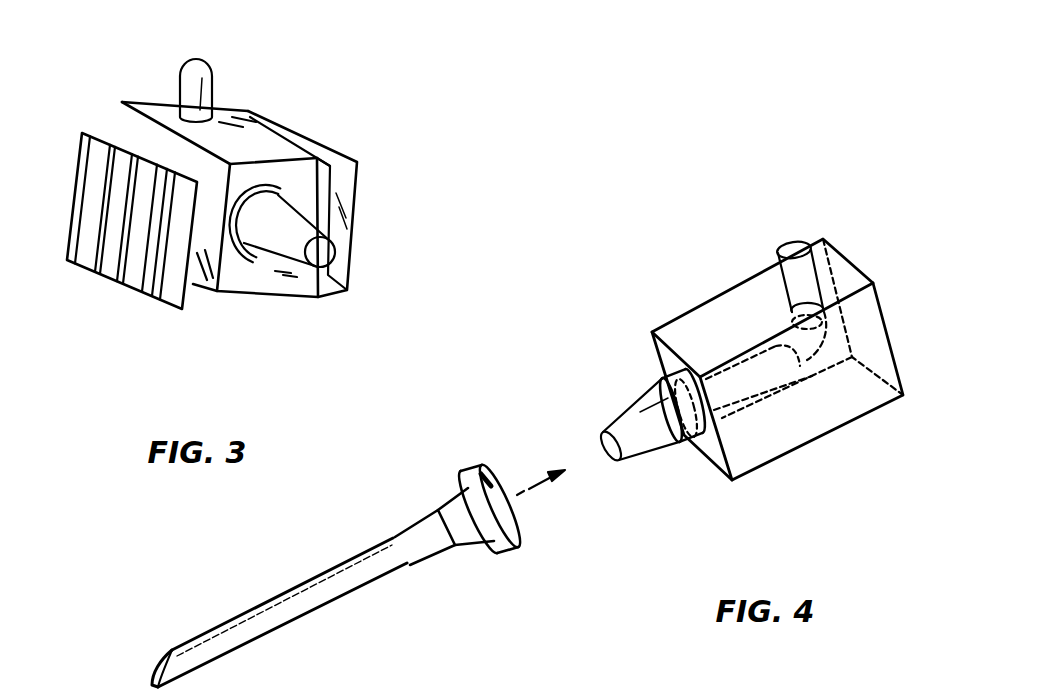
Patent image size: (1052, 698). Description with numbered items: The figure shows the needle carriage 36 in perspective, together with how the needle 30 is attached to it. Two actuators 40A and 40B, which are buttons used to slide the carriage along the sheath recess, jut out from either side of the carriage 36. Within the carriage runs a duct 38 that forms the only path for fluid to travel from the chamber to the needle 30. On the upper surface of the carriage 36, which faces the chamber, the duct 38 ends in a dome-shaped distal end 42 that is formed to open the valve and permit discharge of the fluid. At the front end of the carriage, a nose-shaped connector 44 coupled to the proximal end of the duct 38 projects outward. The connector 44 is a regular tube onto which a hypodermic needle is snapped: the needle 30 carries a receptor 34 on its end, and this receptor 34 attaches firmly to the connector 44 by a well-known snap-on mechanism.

In FIG. 4, the needle 30 is at (282, 597).
In FIG. 4, the receptor 34 is at (450, 557).
In FIG. 3, the carriage 36 is at (427, 137).
In FIG. 4, the carriage 36 is at (710, 250).
In FIG. 4, the duct 38 is at (760, 378).
In FIG. 3, the actuator 40A is at (106, 137).
In FIG. 4, the actuator 40A is at (470, 697).
In FIG. 3, the actuator 40B is at (302, 130).
In FIG. 3, the dome-shaped distal end 42 is at (217, 90).
In FIG. 4, the dome-shaped distal end 42 is at (807, 243).
In FIG. 3, the nose-shaped connector 44 is at (277, 241).
In FIG. 4, the nose-shaped connector 44 is at (608, 412).